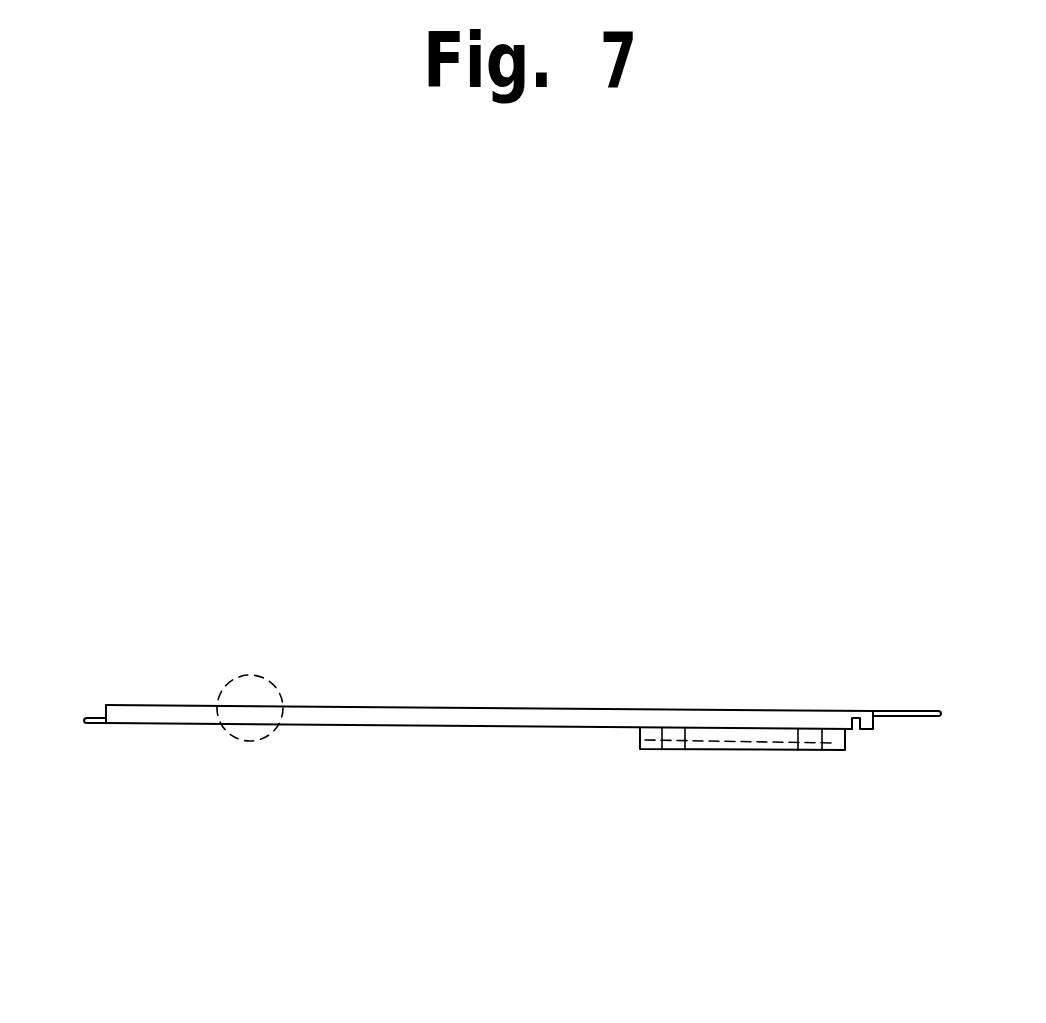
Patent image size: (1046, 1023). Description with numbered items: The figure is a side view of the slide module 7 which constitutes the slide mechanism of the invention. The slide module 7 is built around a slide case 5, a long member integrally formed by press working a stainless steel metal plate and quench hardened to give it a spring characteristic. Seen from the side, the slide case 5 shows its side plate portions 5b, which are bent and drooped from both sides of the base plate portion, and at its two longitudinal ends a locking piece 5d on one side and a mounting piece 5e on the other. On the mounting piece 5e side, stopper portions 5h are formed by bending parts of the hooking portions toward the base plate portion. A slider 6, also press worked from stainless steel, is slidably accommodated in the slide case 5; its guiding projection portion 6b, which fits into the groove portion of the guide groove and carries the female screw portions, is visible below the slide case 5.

The slide case 5 is at (506, 704).
The side plate portions 5b is at (461, 724).
The locking piece 5d is at (88, 724).
The mounting piece 5e is at (908, 711).
The stopper portions 5h is at (864, 731).
The slider 6 is at (742, 799).
The guiding projection portion 6b is at (758, 750).
The slide module 7 is at (506, 727).